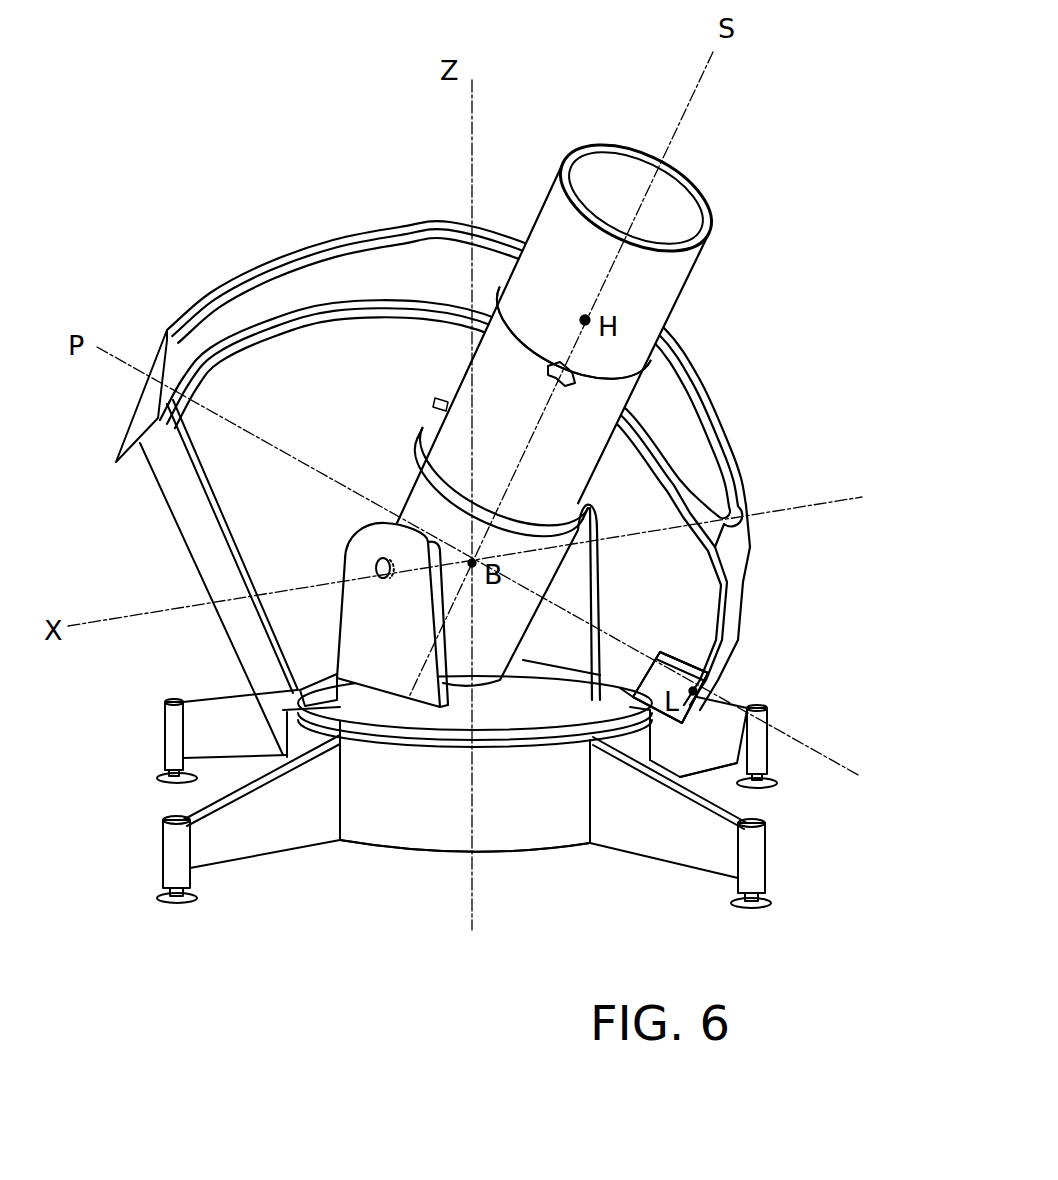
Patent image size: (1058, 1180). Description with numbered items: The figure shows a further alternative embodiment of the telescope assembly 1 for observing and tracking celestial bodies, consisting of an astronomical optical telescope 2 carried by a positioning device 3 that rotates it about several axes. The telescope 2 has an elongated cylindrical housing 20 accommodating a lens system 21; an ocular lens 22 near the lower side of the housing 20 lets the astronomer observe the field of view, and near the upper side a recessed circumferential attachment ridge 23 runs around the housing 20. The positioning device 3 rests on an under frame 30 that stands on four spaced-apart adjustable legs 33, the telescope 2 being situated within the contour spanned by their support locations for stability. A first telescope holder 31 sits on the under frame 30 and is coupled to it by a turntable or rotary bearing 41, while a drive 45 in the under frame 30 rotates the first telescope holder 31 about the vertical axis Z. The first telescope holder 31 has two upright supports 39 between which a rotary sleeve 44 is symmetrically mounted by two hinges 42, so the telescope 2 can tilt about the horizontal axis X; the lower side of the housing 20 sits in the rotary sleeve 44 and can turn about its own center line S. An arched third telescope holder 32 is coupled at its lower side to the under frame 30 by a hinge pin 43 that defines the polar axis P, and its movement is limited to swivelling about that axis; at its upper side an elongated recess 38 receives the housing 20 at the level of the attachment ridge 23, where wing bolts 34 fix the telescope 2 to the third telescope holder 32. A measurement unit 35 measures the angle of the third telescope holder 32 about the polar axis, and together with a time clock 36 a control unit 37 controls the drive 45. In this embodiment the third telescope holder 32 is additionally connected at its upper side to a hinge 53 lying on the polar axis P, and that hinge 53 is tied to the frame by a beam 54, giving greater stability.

The telescope assembly 1 is at (203, 221).
The telescope 2 is at (760, 226).
The positioning device 3 is at (362, 903).
The housing 20 is at (555, 215).
The lens system 21 is at (594, 150).
The ocular lens 22 is at (434, 402).
The circumferential attachment ridge 23 is at (650, 356).
The under frame 30 is at (533, 820).
The first telescope holder 31 is at (605, 682).
The third arched telescope holder 32 is at (735, 422).
The adjustable legs 33 is at (210, 745).
The wing bolts 34 is at (553, 382).
The measurement unit 35 is at (715, 662).
The time clock 36 is at (766, 667).
The control unit 37 is at (781, 642).
The elongated recess 38 is at (375, 222).
The supports 39 is at (360, 550).
The rotary bearing 41 is at (308, 685).
The hinges 42 is at (383, 556).
The hinge pin 43 is at (652, 652).
The rotary sleeve 44 is at (560, 572).
The drive 45 is at (440, 830).
The hinge 53 is at (153, 352).
The beam 54 is at (200, 526).